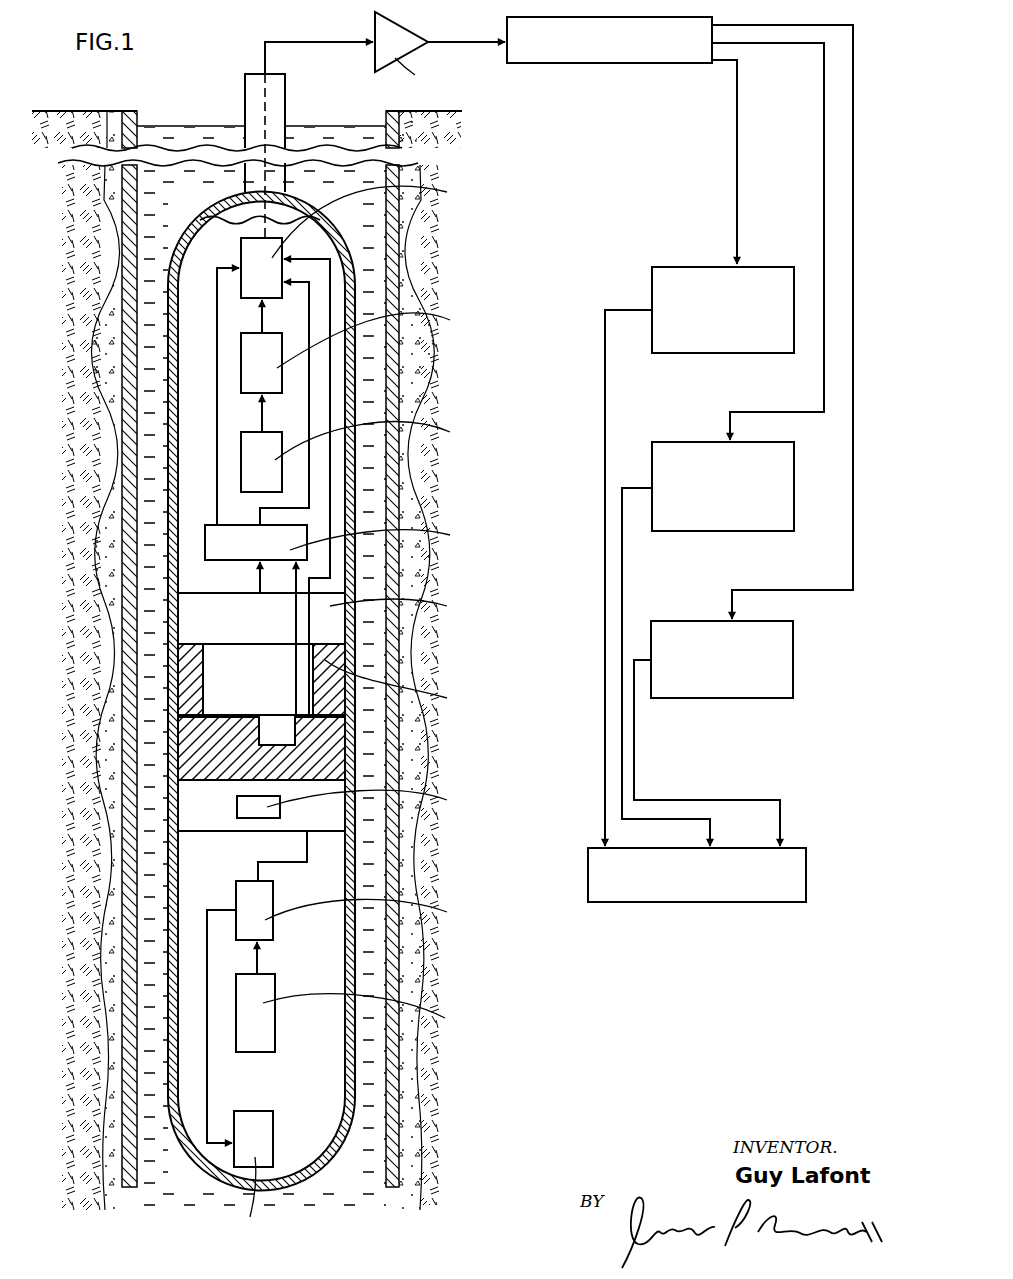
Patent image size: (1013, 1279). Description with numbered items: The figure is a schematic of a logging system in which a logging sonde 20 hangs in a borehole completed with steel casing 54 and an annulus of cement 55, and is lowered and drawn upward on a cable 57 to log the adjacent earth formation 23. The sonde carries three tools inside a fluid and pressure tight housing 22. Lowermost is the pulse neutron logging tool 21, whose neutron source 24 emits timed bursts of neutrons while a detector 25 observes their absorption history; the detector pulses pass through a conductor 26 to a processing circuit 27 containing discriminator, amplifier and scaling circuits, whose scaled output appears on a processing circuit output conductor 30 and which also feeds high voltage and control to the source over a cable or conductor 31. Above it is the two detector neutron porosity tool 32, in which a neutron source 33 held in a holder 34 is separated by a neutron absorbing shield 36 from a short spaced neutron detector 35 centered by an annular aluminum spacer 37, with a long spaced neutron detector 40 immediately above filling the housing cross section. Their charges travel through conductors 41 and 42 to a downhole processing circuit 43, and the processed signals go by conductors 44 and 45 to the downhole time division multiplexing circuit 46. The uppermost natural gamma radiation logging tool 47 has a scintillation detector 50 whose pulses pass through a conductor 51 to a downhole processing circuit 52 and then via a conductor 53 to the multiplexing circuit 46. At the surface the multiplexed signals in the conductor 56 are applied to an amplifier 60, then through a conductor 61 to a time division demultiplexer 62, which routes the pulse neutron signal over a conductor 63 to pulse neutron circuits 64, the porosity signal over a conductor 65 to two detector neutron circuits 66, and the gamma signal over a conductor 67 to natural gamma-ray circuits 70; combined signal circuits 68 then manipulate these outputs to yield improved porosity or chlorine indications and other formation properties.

The logging sonde 20 is at (200, 386).
The pulse neutron logging tool 21 is at (315, 1061).
The fluid and pressure tight housing 22 is at (365, 837).
The earth formation 23 is at (478, 979).
The neutron source 24 is at (263, 1140).
The detector 25 is at (265, 1018).
The conductor 26 is at (261, 962).
The processing circuit 27 is at (263, 892).
The processing circuit output conductor 30 is at (257, 868).
The cable or conductor 31 is at (210, 1058).
The two detector neutron porosity tool 32 is at (259, 748).
The neutron source 33 is at (238, 802).
The holder 34 is at (258, 827).
The short spaced neutron detector 35 is at (215, 678).
The neutron absorbing shield 36 is at (322, 755).
The annular aluminum spacer 37 is at (283, 694).
The long spaced neutron detector 40 is at (197, 618).
The conductor 41 is at (295, 582).
The conductor 42 is at (258, 582).
The downhole processing circuit 43 is at (213, 539).
The conductor 44 is at (308, 377).
The conductor 45 is at (216, 353).
The downhole time division multiplexing circuit 46 is at (248, 248).
The natural gamma radiation logging tool 47 is at (232, 473).
The scintillation detector 50 is at (243, 460).
The conductor 51 is at (260, 418).
The downhole processing circuit 52 is at (276, 368).
The conductor 53 is at (260, 325).
The steel casing 54 is at (398, 257).
The annulus of cement 55 is at (420, 377).
The conductor 56 is at (345, 41).
The cable 57 is at (285, 97).
The amplifier 60 is at (393, 26).
The conductor 61 is at (471, 40).
The time division demultiplexer 62 is at (673, 60).
The conductor 63 is at (762, 25).
The pulse neutron circuits 64 is at (745, 694).
The conductor 65 is at (762, 43).
The two detector neutron circuits 66 is at (733, 528).
The conductor 67 is at (735, 158).
The combined signal circuits 68 is at (793, 888).
The natural gamma-ray circuits 70 is at (752, 352).